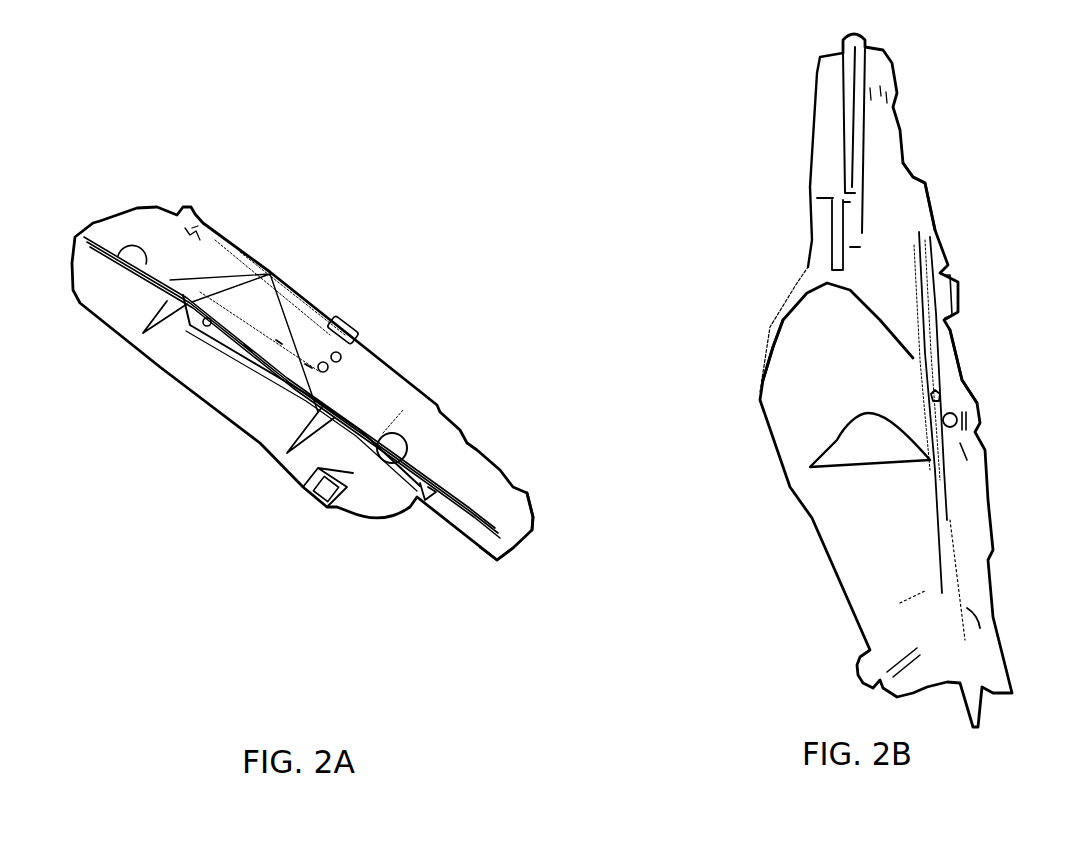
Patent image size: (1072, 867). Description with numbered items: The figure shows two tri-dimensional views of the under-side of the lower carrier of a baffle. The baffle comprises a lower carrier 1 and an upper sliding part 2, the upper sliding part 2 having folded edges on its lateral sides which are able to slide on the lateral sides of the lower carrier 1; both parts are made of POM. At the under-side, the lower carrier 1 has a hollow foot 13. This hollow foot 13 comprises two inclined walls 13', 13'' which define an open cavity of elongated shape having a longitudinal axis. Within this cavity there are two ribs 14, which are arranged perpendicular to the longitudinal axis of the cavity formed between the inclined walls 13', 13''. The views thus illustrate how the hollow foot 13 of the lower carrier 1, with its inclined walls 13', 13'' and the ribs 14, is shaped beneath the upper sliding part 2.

In FIG. 2A, the lower carrier 1 is at (507, 569).
In FIG. 2B, the lower carrier 1 is at (816, 257).
In FIG. 2A, the upper sliding part 2 is at (534, 522).
In FIG. 2B, the upper sliding part 2 is at (926, 183).
In FIG. 2A, the hollow foot 13 is at (339, 552).
In FIG. 2B, the inclined wall 13' is at (719, 324).
In FIG. 2B, the inclined wall 13'' is at (1001, 366).
In FIG. 2A, the ribs 14 is at (320, 410).
In FIG. 2B, the ribs 14 is at (903, 606).